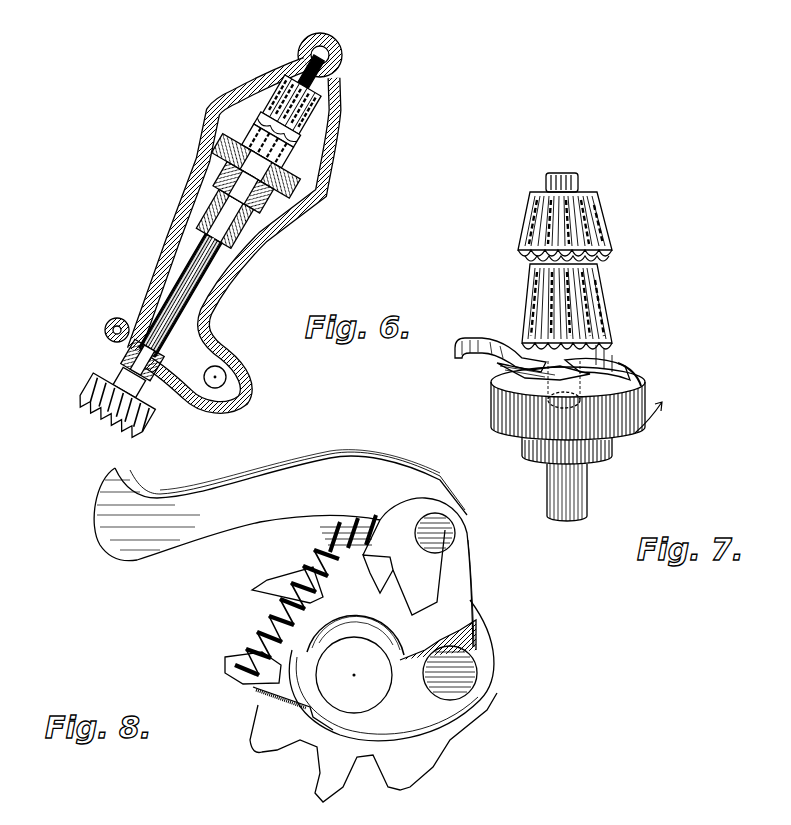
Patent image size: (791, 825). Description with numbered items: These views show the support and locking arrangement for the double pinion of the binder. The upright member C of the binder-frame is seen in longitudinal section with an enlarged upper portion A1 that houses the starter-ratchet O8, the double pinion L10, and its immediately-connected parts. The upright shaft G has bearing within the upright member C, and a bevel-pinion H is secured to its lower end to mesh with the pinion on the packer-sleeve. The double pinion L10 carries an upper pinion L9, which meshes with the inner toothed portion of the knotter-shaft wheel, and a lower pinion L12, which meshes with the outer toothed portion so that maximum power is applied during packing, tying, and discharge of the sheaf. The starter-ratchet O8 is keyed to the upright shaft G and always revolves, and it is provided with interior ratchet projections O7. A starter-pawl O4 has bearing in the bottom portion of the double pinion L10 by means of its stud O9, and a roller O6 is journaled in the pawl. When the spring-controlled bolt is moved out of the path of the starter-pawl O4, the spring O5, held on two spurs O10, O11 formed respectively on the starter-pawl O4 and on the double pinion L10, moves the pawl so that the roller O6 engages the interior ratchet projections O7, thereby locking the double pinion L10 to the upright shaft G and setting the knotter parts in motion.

In FIG. 6, the enlarged upper portion A1 is at (313, 158).
In FIG. 6, the upright member C is at (187, 200).
In FIG. 6, the upright shaft G is at (177, 292).
In FIG. 7, the upright shaft G is at (587, 485).
In FIG. 6, the bevel-pinion H is at (88, 388).
In FIG. 6, the upper pinion L9 is at (323, 100).
In FIG. 7, the upper pinion L9 is at (593, 230).
In FIG. 6, the double pinion L10 is at (290, 127).
In FIG. 7, the double pinion L10 is at (530, 259).
In FIG. 8, the double pinion L10 is at (373, 630).
In FIG. 6, the lower pinion L12 is at (260, 130).
In FIG. 7, the lower pinion L12 is at (598, 307).
In FIG. 8, the lower pinion L12 is at (337, 765).
In FIG. 6, the starter-pawl O4 is at (275, 167).
In FIG. 7, the starter-pawl O4 is at (475, 323).
In FIG. 8, the starter-pawl O4 is at (278, 480).
In FIG. 6, the spring O5 is at (258, 208).
In FIG. 7, the spring O5 is at (517, 363).
In FIG. 8, the spring O5 is at (277, 573).
In FIG. 6, the roller O6 is at (300, 214).
In FIG. 7, the roller O6 is at (570, 362).
In FIG. 8, the roller O6 is at (465, 518).
In FIG. 6, the interior ratchet projections O7 is at (243, 146).
In FIG. 7, the interior ratchet projections O7 is at (633, 342).
In FIG. 7, the starter-ratchet O8 is at (648, 390).
In FIG. 7, the stud O9 is at (637, 372).
In FIG. 8, the stud O9 is at (457, 683).
In FIG. 8, the spur O10 is at (363, 555).
In FIG. 8, the spur O11 is at (255, 682).